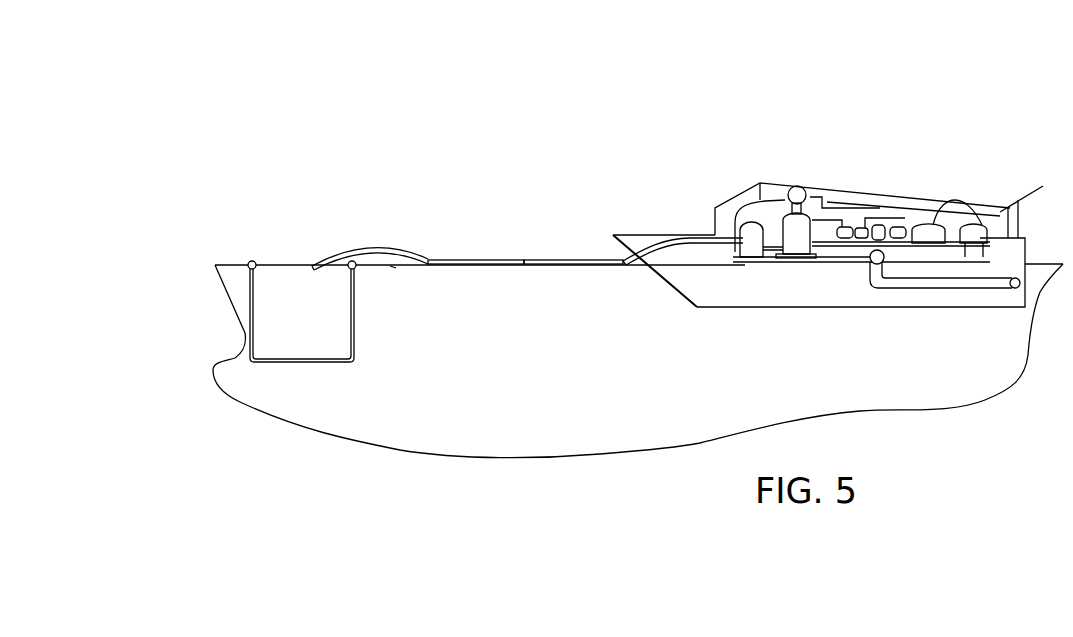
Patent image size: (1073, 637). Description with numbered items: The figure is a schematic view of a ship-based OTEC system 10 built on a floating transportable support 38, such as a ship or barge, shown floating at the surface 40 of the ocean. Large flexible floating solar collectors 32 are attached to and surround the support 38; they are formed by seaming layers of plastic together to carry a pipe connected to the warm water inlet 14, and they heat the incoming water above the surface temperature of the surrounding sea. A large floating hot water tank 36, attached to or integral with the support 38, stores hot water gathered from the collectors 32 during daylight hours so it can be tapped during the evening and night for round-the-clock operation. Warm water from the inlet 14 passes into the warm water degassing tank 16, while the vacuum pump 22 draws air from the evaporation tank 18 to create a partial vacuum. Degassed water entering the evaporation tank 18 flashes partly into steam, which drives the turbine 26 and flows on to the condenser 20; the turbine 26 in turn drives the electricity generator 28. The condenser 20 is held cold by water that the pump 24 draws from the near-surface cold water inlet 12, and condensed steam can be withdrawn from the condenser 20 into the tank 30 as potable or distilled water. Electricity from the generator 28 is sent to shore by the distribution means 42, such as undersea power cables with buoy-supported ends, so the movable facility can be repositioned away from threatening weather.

The OTEC system 10 is at (853, 122).
The cold water inlet 12 is at (995, 289).
The warm water inlet 14 is at (367, 250).
The warm water degassing tank 16 is at (713, 233).
The evaporation tank 18 is at (742, 215).
The condenser 20 is at (958, 224).
The vacuum pump 22 is at (804, 189).
The pump 24 is at (867, 272).
The turbine 26 is at (884, 226).
The electricity generator 28 is at (908, 226).
The tank 30 is at (990, 230).
The floating solar collector 32 is at (505, 258).
The floating hot water tank 36 is at (248, 263).
The floating transportable support 38 is at (772, 186).
The surface of the body of water 40 is at (393, 267).
The means to distribute electricity 42 is at (1026, 197).